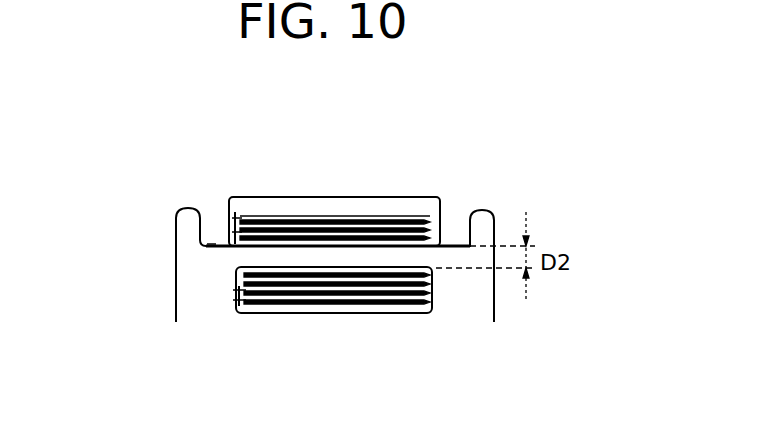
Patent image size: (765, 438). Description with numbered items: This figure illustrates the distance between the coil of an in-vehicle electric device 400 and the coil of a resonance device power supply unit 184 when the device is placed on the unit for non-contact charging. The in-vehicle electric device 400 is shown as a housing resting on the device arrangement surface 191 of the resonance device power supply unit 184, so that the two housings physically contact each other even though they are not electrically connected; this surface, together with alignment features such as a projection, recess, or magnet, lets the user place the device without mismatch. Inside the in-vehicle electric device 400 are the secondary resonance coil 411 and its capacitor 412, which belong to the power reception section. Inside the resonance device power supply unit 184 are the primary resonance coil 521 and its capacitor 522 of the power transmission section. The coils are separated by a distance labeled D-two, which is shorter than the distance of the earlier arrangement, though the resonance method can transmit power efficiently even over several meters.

The resonance device power supply unit 184 is at (168, 323).
The device arrangement surface 191 is at (212, 243).
The in-vehicle electric device 400 is at (393, 197).
The secondary resonance coil 411 is at (290, 222).
The capacitor 412 is at (232, 210).
The primary resonance coil 521 is at (385, 314).
The capacitor 522 is at (236, 306).